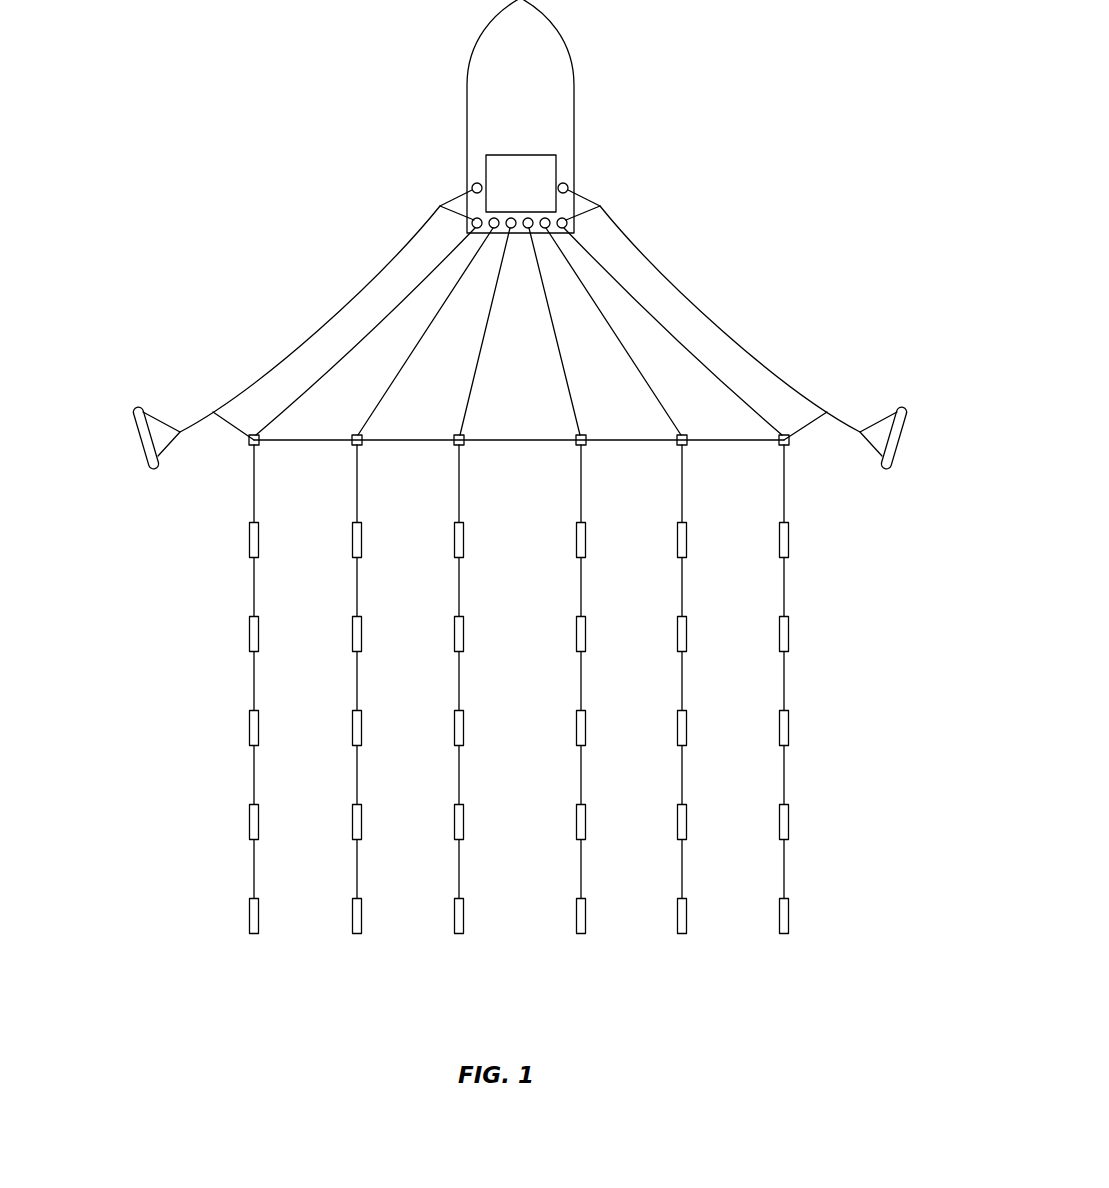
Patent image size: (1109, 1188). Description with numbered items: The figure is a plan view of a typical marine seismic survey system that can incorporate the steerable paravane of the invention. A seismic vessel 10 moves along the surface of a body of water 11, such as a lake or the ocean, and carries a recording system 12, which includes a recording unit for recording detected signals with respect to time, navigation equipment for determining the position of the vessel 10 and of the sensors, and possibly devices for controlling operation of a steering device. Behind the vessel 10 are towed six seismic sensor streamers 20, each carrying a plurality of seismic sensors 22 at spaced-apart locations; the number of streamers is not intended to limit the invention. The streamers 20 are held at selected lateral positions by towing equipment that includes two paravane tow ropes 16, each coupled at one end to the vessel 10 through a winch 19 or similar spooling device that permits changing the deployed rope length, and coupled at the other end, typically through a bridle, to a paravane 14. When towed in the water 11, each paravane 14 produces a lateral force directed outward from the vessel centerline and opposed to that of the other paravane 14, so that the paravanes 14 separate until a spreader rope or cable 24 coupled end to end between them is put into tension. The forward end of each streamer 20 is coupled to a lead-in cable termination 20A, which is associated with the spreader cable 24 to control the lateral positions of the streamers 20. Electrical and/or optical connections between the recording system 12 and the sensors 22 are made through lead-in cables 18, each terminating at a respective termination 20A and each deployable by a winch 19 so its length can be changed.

The seismic vessel 10 is at (575, 103).
The body of water 11 is at (771, 211).
The recording system 12 is at (540, 184).
The paravane 14 is at (137, 437).
The paravane tow rope 16 is at (320, 327).
The lead-in cable 18 is at (408, 295).
The winch 19 is at (440, 206).
The seismic sensor streamer 20 is at (252, 480).
The lead-in cable termination 20A is at (254, 435).
The seismic sensor 22 is at (249, 540).
The spreader rope or cable 24 is at (487, 441).